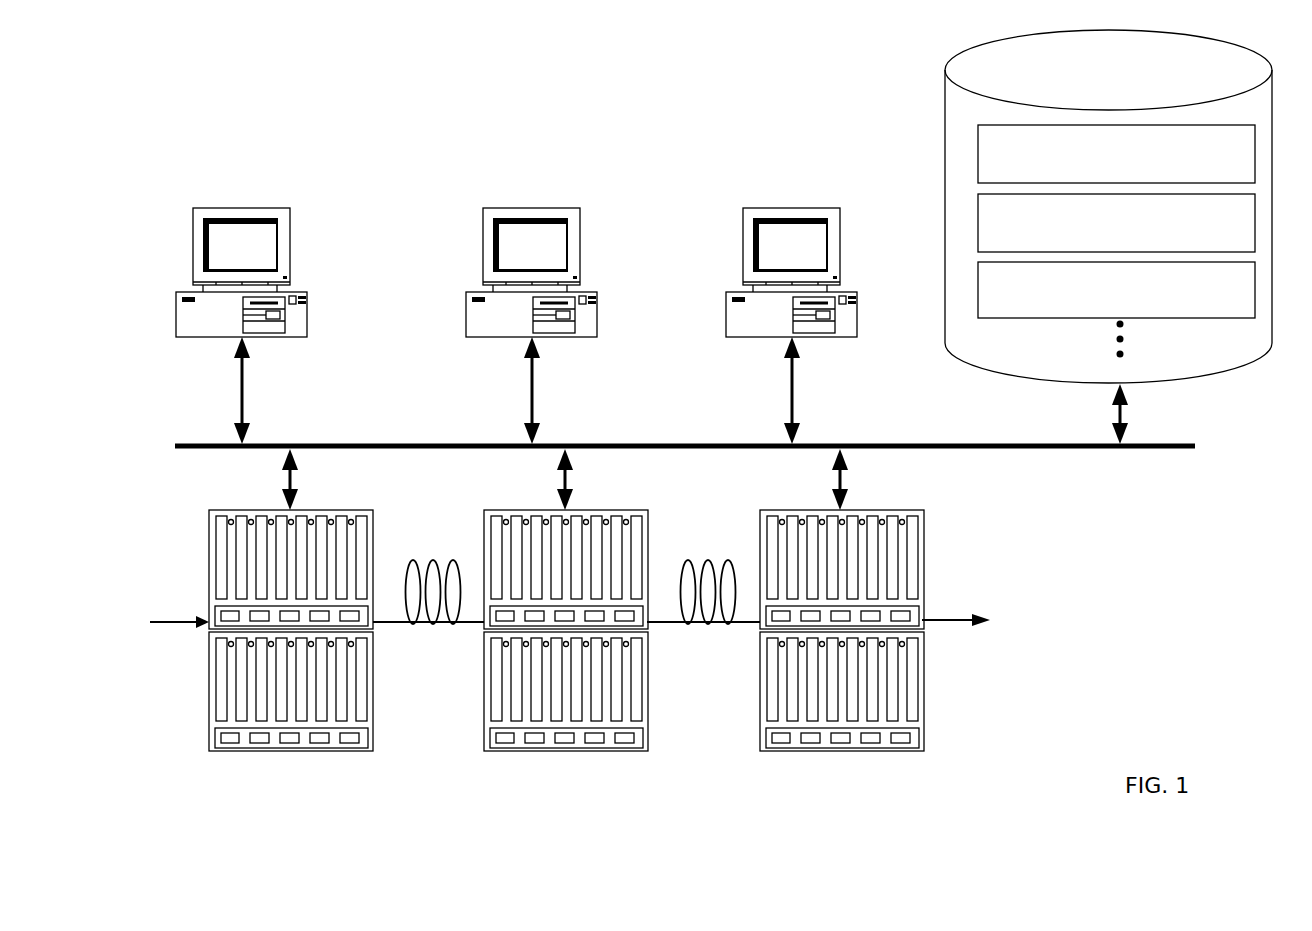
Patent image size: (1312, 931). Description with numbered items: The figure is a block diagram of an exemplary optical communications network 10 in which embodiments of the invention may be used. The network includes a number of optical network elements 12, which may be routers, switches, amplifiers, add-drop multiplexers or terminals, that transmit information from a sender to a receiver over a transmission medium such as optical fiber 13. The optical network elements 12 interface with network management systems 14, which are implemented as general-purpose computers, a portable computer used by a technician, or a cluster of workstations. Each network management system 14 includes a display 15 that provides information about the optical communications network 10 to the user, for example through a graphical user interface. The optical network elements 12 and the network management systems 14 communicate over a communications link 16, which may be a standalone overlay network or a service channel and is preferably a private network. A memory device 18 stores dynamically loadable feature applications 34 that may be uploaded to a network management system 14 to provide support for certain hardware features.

The optical communications network 10 is at (622, 70).
The optical network element 12 is at (288, 756).
The optical fiber 13 is at (406, 623).
The network management system 14 is at (208, 207).
The display 15 is at (290, 257).
The communications link 16 is at (373, 444).
The memory device 18 is at (945, 93).
The dynamically loadable feature application 34 is at (978, 154).